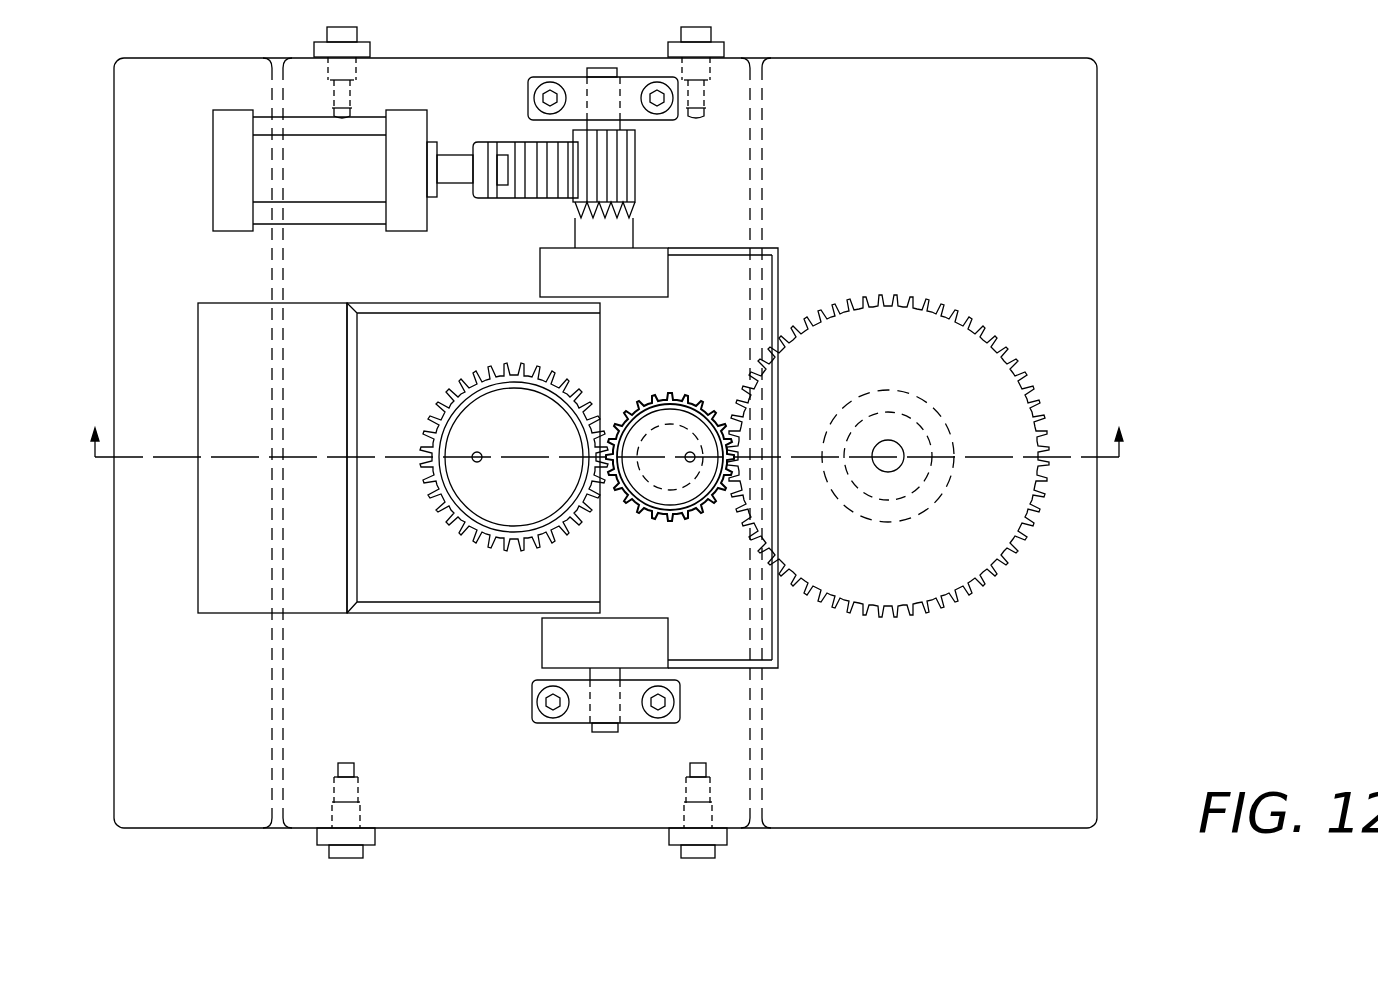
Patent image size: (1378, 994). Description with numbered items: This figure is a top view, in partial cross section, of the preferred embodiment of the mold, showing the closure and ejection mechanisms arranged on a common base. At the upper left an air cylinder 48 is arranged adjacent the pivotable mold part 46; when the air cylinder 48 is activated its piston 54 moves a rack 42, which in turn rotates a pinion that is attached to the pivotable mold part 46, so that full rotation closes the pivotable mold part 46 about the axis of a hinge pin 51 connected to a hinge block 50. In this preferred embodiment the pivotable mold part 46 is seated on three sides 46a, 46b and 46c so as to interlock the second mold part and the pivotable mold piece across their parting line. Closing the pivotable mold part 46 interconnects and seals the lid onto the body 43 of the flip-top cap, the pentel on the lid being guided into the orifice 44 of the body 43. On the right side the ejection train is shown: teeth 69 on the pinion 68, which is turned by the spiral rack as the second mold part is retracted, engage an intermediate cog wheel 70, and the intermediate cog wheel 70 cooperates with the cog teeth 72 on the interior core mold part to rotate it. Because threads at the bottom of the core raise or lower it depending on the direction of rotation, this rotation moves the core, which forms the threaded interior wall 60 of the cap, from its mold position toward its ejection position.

The rack 42 is at (524, 200).
The body 43 is at (492, 415).
The orifice 44 is at (480, 449).
The pivotable mold part 46 is at (694, 461).
The first seating side 46a is at (781, 291).
The second seating side 46b is at (702, 253).
The third seating side 46c is at (690, 670).
The air cylinder 48 is at (312, 234).
The hinge block 50 is at (562, 725).
The hinge pin 51 is at (602, 735).
The piston 54 is at (448, 152).
The interior wall 60 is at (922, 403).
The pinion 68 is at (888, 475).
The teeth 69 is at (935, 600).
The intermediate cog wheel 70 is at (640, 490).
The cog teeth 72 is at (473, 540).